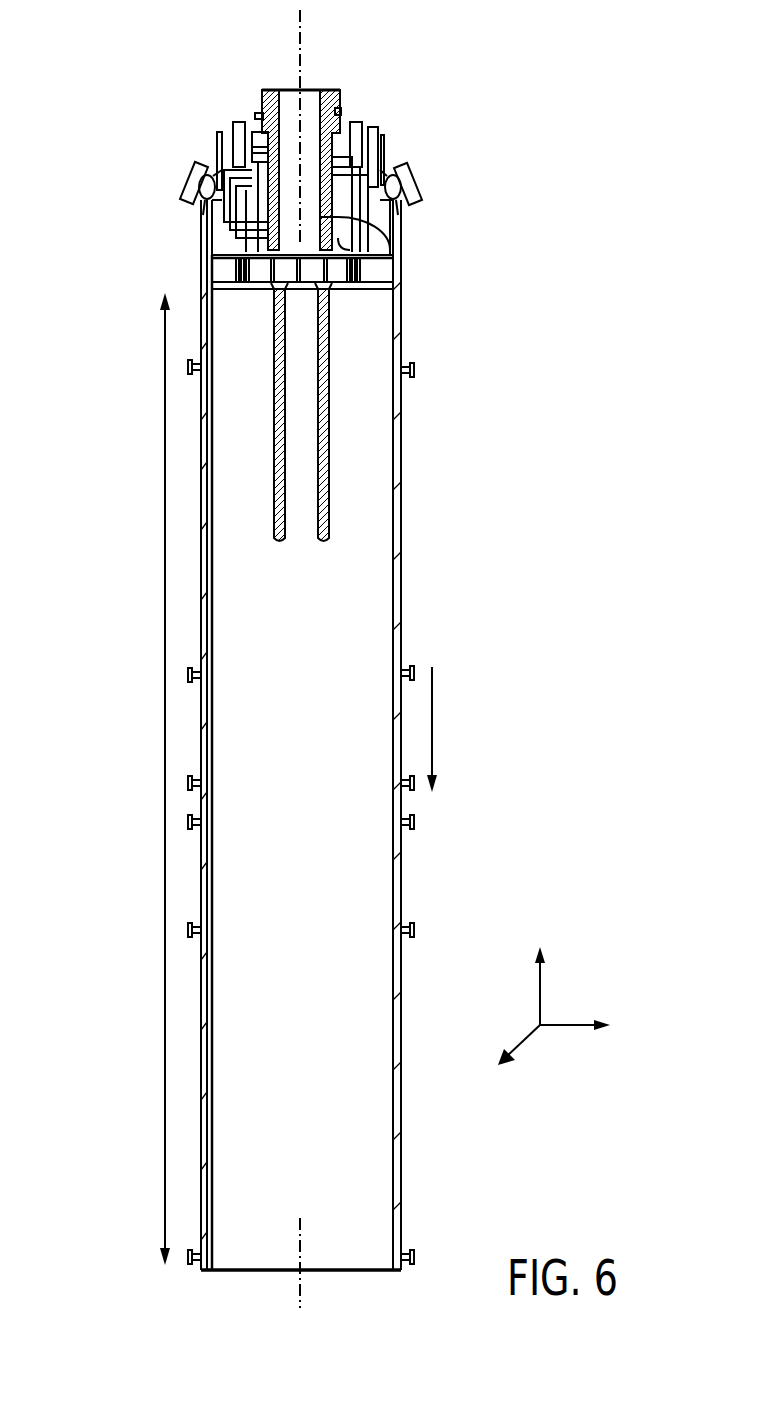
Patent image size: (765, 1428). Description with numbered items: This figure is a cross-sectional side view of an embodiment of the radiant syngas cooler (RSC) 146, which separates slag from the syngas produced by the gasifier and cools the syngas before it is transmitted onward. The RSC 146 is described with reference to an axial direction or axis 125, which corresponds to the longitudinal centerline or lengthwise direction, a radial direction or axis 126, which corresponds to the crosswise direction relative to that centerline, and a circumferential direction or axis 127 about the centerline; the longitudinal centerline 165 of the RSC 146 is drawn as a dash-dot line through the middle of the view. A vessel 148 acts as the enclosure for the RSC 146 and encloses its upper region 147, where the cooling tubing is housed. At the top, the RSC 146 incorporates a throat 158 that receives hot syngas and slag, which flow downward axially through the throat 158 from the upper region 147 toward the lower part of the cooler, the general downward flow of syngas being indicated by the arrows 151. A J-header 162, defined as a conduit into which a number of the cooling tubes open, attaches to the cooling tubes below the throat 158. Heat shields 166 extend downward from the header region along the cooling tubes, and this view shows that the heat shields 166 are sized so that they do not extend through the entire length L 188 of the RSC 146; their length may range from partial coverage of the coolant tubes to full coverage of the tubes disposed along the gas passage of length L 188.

The radiant syngas cooler 146 is at (208, 72).
The centerline axis 165 is at (302, 33).
The throat 158 is at (319, 108).
The J-header 162 is at (376, 288).
The upper region 147 is at (401, 320).
The heat shield 166 is at (329, 375).
The vessel 148 is at (398, 562).
The arrows 151 is at (432, 693).
The length L 188 is at (165, 608).
The axial direction or axis 125 is at (545, 975).
The radial direction or axis 126 is at (575, 1028).
The circumferential direction or axis 127 is at (520, 1048).